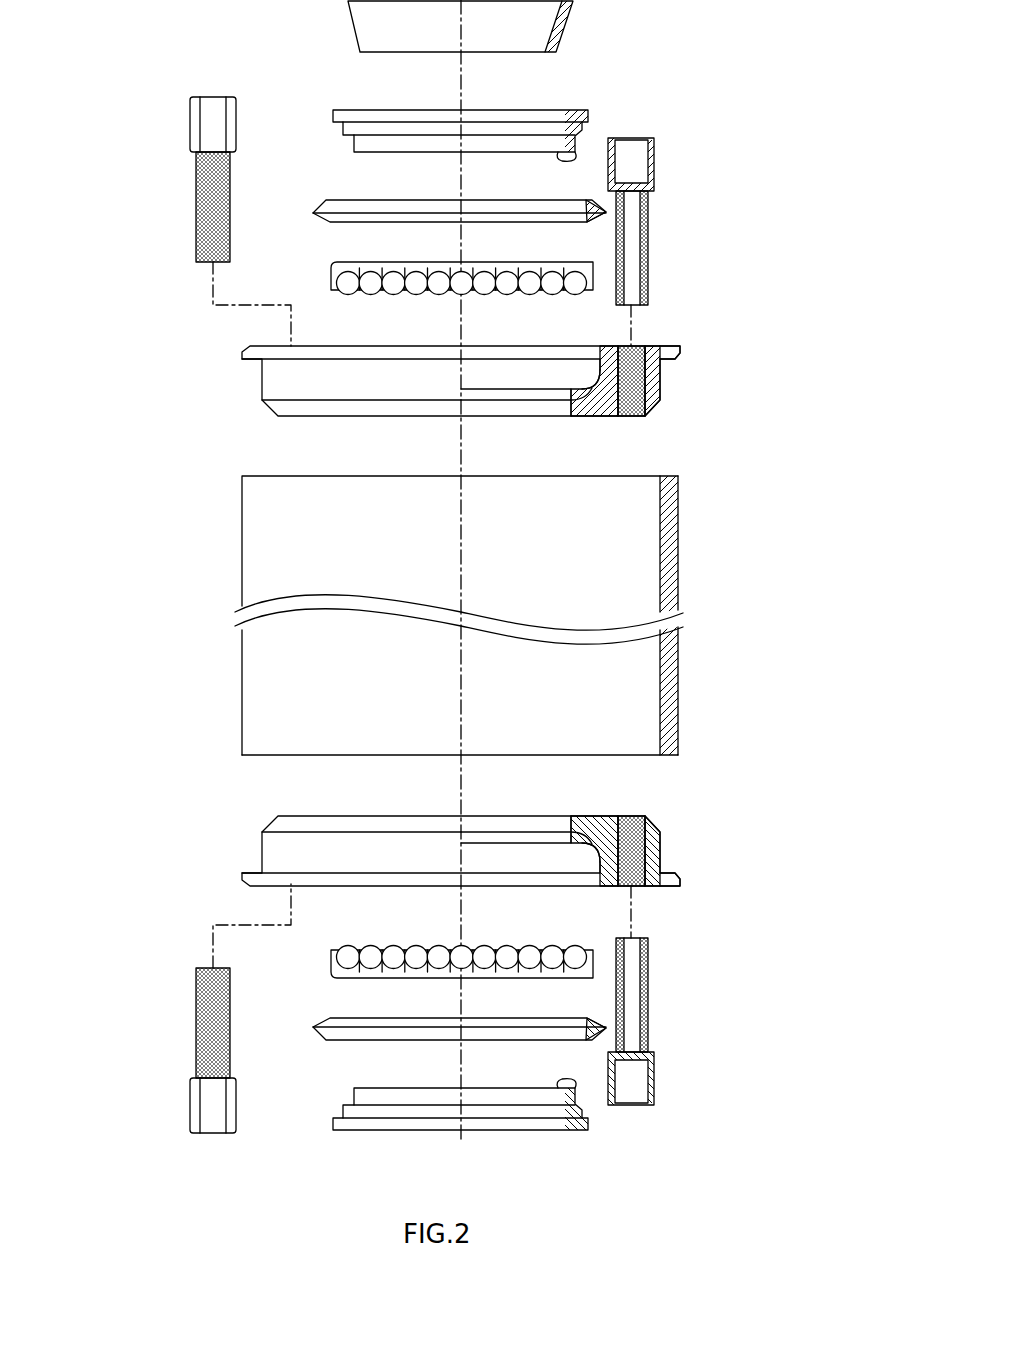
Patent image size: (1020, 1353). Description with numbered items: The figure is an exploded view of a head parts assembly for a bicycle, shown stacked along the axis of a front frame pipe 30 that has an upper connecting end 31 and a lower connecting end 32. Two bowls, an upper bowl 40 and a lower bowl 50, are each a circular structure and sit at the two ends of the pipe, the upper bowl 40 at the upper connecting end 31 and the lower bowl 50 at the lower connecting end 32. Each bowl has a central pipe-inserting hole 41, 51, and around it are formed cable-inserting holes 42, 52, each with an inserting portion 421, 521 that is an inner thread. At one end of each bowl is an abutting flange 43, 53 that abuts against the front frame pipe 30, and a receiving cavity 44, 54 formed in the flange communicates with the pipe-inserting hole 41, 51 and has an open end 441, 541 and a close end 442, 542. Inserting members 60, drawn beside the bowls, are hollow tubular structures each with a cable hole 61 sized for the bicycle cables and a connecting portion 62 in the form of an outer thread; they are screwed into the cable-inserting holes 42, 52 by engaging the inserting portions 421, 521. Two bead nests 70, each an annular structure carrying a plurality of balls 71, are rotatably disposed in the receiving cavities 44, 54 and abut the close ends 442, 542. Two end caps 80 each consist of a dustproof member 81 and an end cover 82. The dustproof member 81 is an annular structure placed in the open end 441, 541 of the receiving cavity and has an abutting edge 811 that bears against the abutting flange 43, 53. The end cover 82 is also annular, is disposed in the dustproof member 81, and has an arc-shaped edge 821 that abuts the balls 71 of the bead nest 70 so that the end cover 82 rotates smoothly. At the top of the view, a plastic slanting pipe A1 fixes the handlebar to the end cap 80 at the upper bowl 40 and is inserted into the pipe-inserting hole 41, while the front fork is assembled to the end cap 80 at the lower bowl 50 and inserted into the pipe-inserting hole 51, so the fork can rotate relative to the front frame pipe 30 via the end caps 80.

The plastic slanting pipe A1 is at (566, 17).
The front frame pipe 30 is at (505, 593).
The upper connecting end 31 is at (661, 480).
The lower connecting end 32 is at (662, 756).
The upper bowl 40 is at (456, 371).
The pipe-inserting hole 41 is at (490, 376).
The cable-inserting hole 42 is at (637, 356).
The inserting portion 421 is at (650, 370).
The abutting flange 43 is at (672, 350).
The receiving cavity 44 is at (600, 351).
The open end 441 is at (600, 352).
The close end 442 is at (586, 396).
The lower bowl 50 is at (460, 849).
The pipe-inserting hole 51 is at (478, 857).
The cable-inserting hole 52 is at (631, 827).
The inserting portion 521 is at (650, 821).
The abutting flange 53 is at (667, 882).
The receiving cavity 54 is at (595, 878).
The open end 541 is at (600, 886).
The close end 542 is at (600, 832).
The inserting member 60 is at (425, 578).
The cable hole 61 is at (673, 611).
The connecting portion 62 is at (649, 212).
The bead nest 70 is at (418, 588).
The ball 71 is at (339, 297).
The end cap 80 is at (485, 642).
The dustproof member 81 is at (463, 637).
The abutting edge 811 is at (595, 221).
The end cover 82 is at (482, 620).
The arc-shaped edge 821 is at (575, 154).